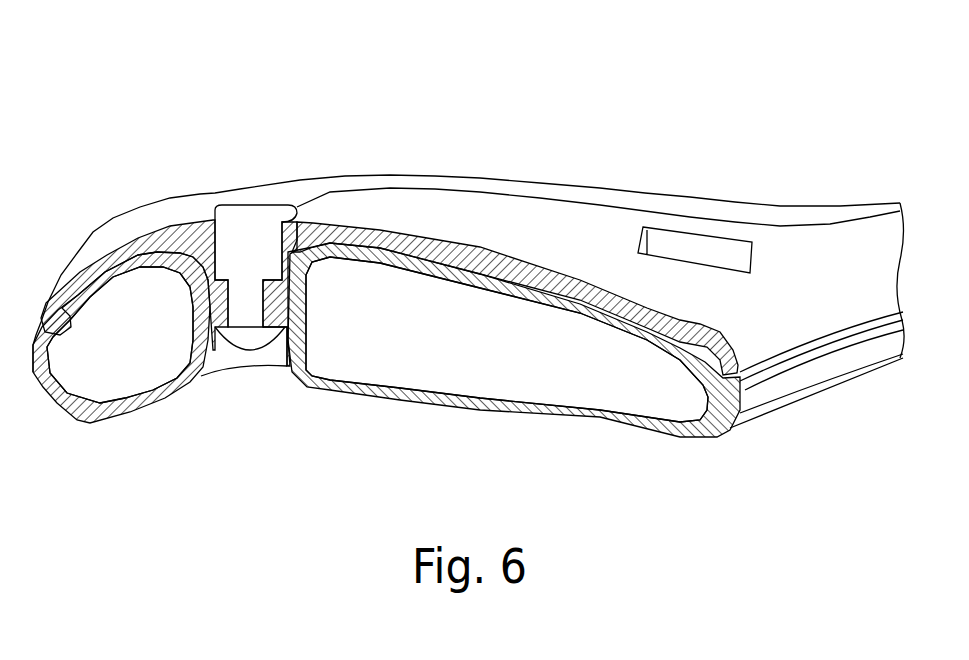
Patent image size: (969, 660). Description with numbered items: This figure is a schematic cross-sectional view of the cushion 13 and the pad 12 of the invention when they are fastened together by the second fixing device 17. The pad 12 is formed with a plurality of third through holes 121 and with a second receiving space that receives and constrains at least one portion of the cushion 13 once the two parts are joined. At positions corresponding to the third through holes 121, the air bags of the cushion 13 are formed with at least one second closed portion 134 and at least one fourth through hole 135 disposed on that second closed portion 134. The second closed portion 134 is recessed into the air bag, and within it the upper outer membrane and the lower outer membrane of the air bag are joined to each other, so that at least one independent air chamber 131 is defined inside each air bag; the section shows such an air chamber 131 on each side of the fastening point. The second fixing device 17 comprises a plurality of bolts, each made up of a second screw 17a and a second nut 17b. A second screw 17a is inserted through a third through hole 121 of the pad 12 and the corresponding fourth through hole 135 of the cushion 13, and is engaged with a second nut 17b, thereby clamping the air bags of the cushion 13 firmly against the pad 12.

The pad 12 is at (387, 203).
The third through hole 121 is at (250, 272).
The cushion 13 is at (482, 410).
The independent air chamber 131 is at (122, 337).
The second closed portion 134 is at (281, 333).
The fourth through hole 135 is at (230, 350).
The second fixing device 17 is at (169, 208).
The second screw 17a is at (243, 283).
The second nut 17b is at (210, 215).